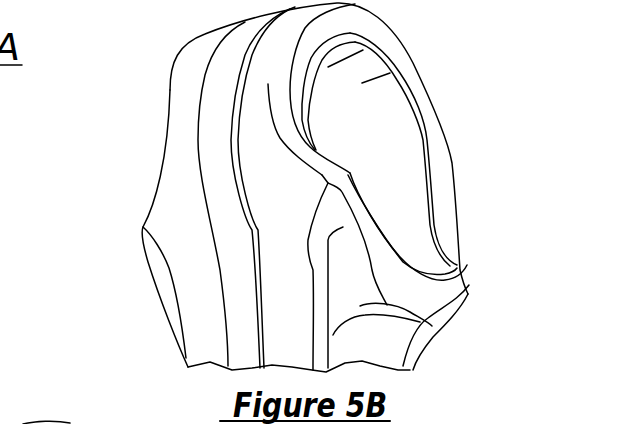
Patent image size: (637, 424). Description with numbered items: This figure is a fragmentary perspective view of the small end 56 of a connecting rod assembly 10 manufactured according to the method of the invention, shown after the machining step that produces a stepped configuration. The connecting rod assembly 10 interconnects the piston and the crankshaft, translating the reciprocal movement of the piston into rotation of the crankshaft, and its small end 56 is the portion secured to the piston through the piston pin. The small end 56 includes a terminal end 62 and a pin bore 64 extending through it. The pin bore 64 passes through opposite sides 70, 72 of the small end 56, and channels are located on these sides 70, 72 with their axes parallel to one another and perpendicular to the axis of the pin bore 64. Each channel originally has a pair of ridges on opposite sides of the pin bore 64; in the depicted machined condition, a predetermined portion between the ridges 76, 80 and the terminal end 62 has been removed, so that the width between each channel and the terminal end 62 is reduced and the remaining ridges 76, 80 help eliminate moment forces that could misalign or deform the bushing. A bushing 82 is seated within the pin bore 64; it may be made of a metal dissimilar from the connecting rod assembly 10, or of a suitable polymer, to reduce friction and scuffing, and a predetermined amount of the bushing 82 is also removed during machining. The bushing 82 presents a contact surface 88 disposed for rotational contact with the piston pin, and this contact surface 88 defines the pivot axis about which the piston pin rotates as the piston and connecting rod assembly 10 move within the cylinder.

The connecting rod assembly 10 is at (113, 163).
The small end 56 is at (150, 132).
The terminal end 62 is at (210, 33).
The pin bore 64 is at (462, 193).
The side of the small end 70 is at (198, 292).
The side of the small end 72 is at (432, 326).
The ridge 76 is at (143, 228).
The ridge 80 is at (447, 287).
The bushing 82 is at (403, 80).
The contact surface 88 is at (385, 115).